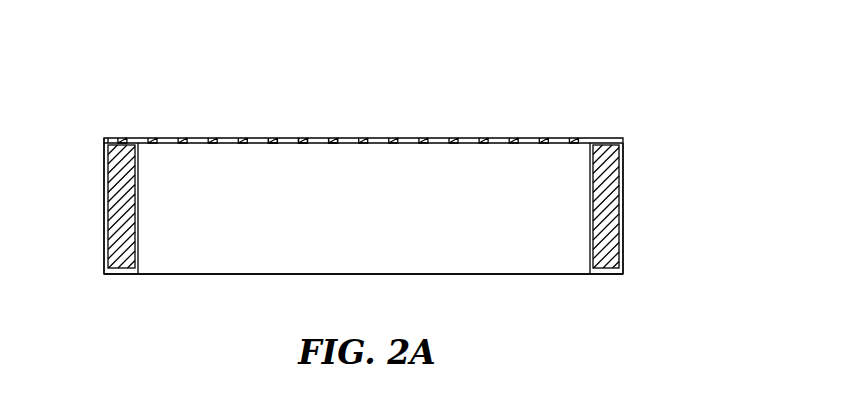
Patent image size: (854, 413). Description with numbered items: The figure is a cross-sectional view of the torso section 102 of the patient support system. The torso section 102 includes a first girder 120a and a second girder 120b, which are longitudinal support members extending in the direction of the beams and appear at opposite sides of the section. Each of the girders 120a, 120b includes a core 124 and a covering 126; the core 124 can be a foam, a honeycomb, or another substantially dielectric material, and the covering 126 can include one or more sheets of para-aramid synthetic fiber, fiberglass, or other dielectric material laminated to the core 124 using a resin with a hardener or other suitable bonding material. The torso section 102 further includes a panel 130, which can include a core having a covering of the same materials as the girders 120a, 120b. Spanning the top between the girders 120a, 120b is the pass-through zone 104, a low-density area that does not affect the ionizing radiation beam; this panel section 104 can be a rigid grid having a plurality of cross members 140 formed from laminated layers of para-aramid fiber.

The torso section 102 is at (655, 95).
The pass-through zone 104 is at (472, 138).
The first girder 120a is at (164, 210).
The second girder 120b is at (568, 213).
The core 124 is at (110, 235).
The covering 126 is at (104, 267).
The panel 130 is at (125, 137).
The cross members 140 is at (330, 138).